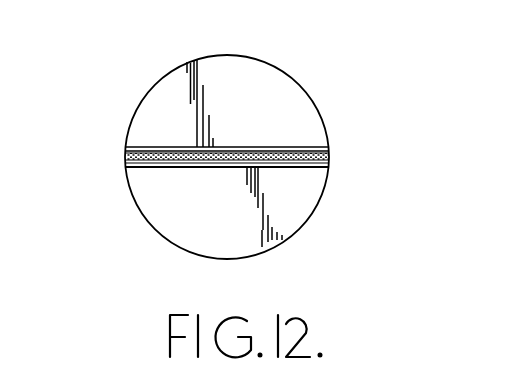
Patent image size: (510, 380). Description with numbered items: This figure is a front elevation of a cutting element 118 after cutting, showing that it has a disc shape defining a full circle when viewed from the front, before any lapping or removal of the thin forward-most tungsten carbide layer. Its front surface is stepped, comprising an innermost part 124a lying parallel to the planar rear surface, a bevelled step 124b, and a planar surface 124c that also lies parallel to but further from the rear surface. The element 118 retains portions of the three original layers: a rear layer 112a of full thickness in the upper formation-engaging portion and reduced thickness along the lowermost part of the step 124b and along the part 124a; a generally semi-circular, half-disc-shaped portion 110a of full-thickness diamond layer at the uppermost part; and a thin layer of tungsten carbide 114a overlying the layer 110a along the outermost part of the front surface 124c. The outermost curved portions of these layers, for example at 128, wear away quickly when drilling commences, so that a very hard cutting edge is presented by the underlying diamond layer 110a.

The cutting element 118 is at (147, 85).
The outermost portion of the layers 128 is at (230, 68).
The planar surface 124c is at (285, 100).
The thin layer of tungsten carbide 114a is at (303, 157).
The rear layer 112a is at (282, 168).
The half-disc-shaped portion of the diamond layer 110a is at (305, 166).
The bevelled step 124b is at (148, 168).
The innermost part of the front surface 124a is at (180, 218).